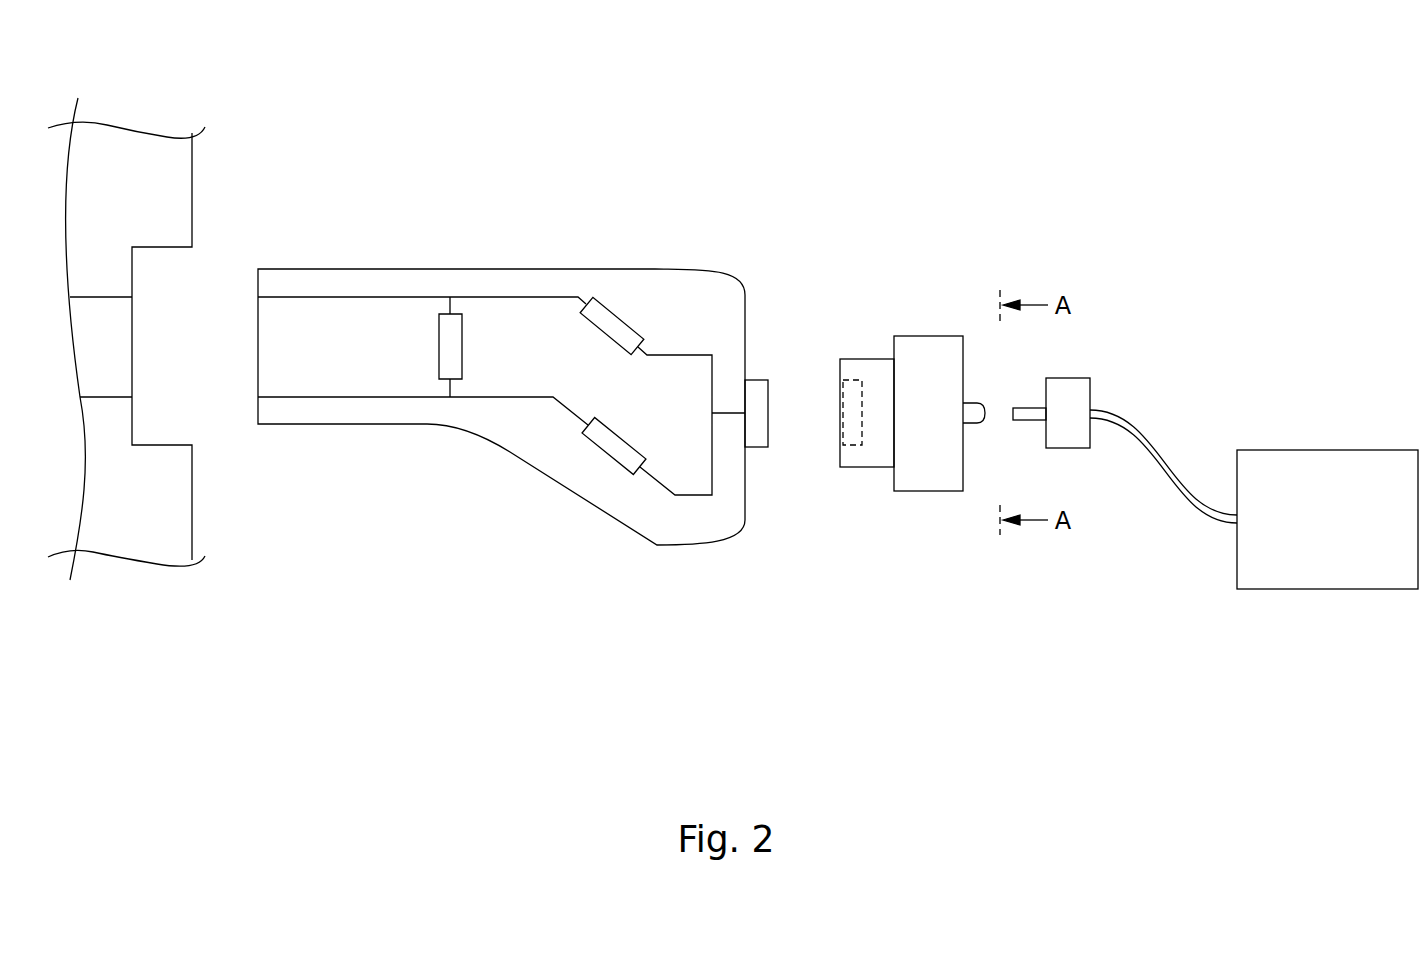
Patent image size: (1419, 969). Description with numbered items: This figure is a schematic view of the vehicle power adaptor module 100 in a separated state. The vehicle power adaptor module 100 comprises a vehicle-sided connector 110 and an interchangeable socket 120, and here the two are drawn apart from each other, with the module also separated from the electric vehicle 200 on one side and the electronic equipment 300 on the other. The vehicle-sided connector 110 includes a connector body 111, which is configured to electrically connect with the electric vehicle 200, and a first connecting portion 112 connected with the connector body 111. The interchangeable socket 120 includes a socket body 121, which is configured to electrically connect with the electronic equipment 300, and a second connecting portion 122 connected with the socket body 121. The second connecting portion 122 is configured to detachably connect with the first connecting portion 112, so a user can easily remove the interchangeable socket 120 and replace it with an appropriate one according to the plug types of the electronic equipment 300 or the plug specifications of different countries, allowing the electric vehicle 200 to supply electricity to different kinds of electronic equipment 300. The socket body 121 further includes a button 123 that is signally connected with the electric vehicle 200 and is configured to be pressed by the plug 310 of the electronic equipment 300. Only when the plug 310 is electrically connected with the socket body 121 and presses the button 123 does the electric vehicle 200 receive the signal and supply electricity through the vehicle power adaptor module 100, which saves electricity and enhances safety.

The vehicle power adaptor module 100 is at (922, 183).
The vehicle-sided connector 110 is at (793, 230).
The connector body 111 is at (692, 290).
The first connecting portion 112 is at (767, 393).
The interchangeable socket 120 is at (980, 230).
The socket body 121 is at (923, 347).
The second connecting portion 122 is at (879, 387).
The button 123 is at (979, 403).
The electric vehicle 200 is at (147, 143).
The electronic equipment 300 is at (1332, 465).
The plug 310 is at (1076, 380).